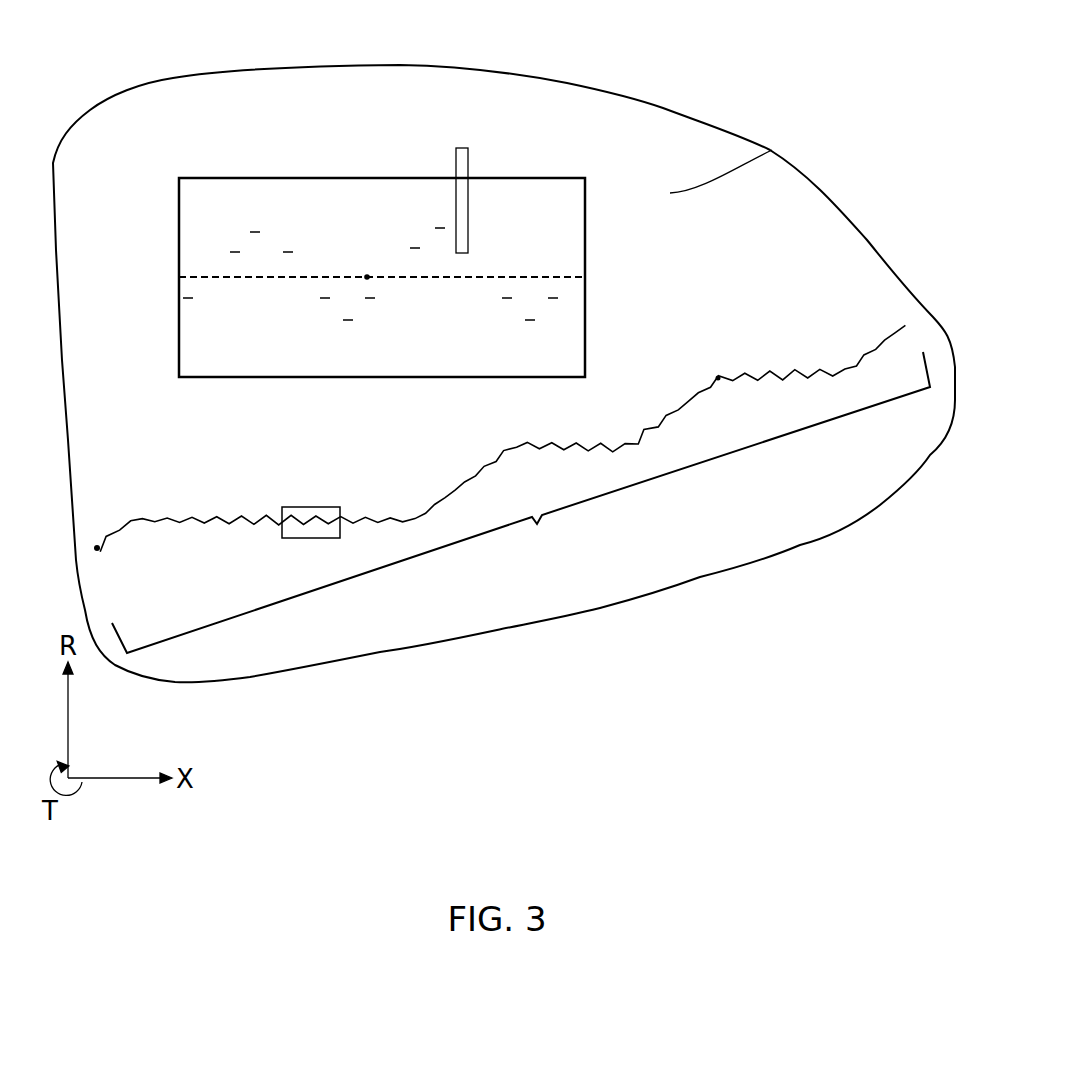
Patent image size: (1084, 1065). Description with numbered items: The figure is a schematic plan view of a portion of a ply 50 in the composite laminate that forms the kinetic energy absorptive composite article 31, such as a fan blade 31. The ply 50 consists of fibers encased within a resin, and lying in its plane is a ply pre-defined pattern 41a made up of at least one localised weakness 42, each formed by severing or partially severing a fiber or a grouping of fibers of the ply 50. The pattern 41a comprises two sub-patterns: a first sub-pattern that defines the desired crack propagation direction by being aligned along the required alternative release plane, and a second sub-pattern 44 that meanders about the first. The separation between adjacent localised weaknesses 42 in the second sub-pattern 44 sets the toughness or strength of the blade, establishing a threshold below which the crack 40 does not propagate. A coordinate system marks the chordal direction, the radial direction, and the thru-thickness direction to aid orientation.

The kinetic energy absorptive composite article 31 is at (663, 108).
The ply 50 is at (772, 150).
The ply pre-defined pattern 41a is at (537, 524).
The crack 40 is at (97, 548).
The second sub-pattern 44 is at (300, 505).
The localised weakness 42 is at (462, 148).